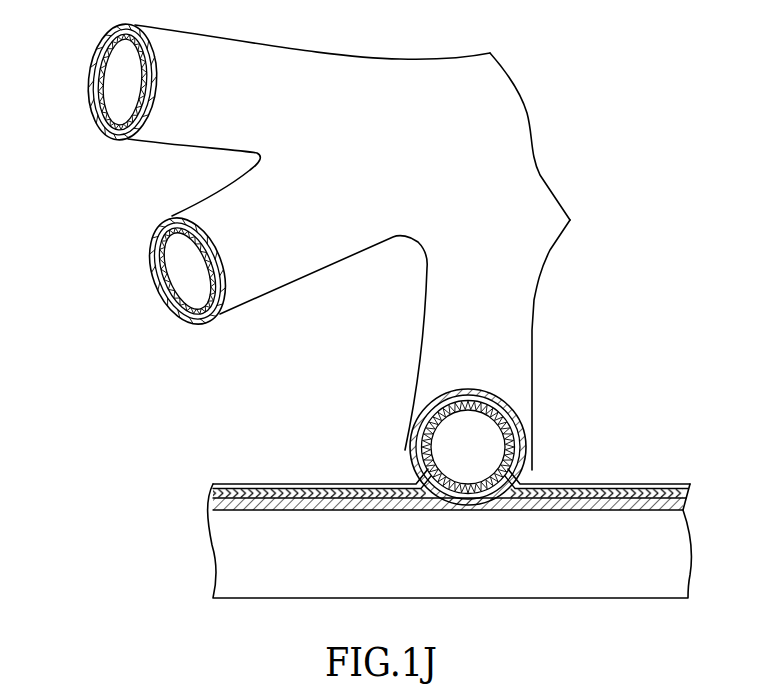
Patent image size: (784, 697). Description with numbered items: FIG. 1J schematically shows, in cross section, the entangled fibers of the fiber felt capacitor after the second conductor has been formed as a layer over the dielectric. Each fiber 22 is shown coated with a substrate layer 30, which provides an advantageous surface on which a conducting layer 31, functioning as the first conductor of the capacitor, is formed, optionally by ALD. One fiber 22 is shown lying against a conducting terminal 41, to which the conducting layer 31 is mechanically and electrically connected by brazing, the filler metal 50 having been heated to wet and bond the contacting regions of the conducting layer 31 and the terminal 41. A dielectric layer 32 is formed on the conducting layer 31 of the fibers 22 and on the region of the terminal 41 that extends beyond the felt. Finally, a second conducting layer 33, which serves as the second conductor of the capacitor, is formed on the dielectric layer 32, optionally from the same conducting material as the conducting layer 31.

The fibers 22 is at (177, 268).
The substrate layer 30 is at (446, 445).
The conducting layer 31 is at (532, 462).
The dielectric layer 32 is at (508, 414).
The second conducting layer 33 is at (447, 395).
The conducting terminal 41 is at (475, 569).
The filler metal 50 is at (213, 502).